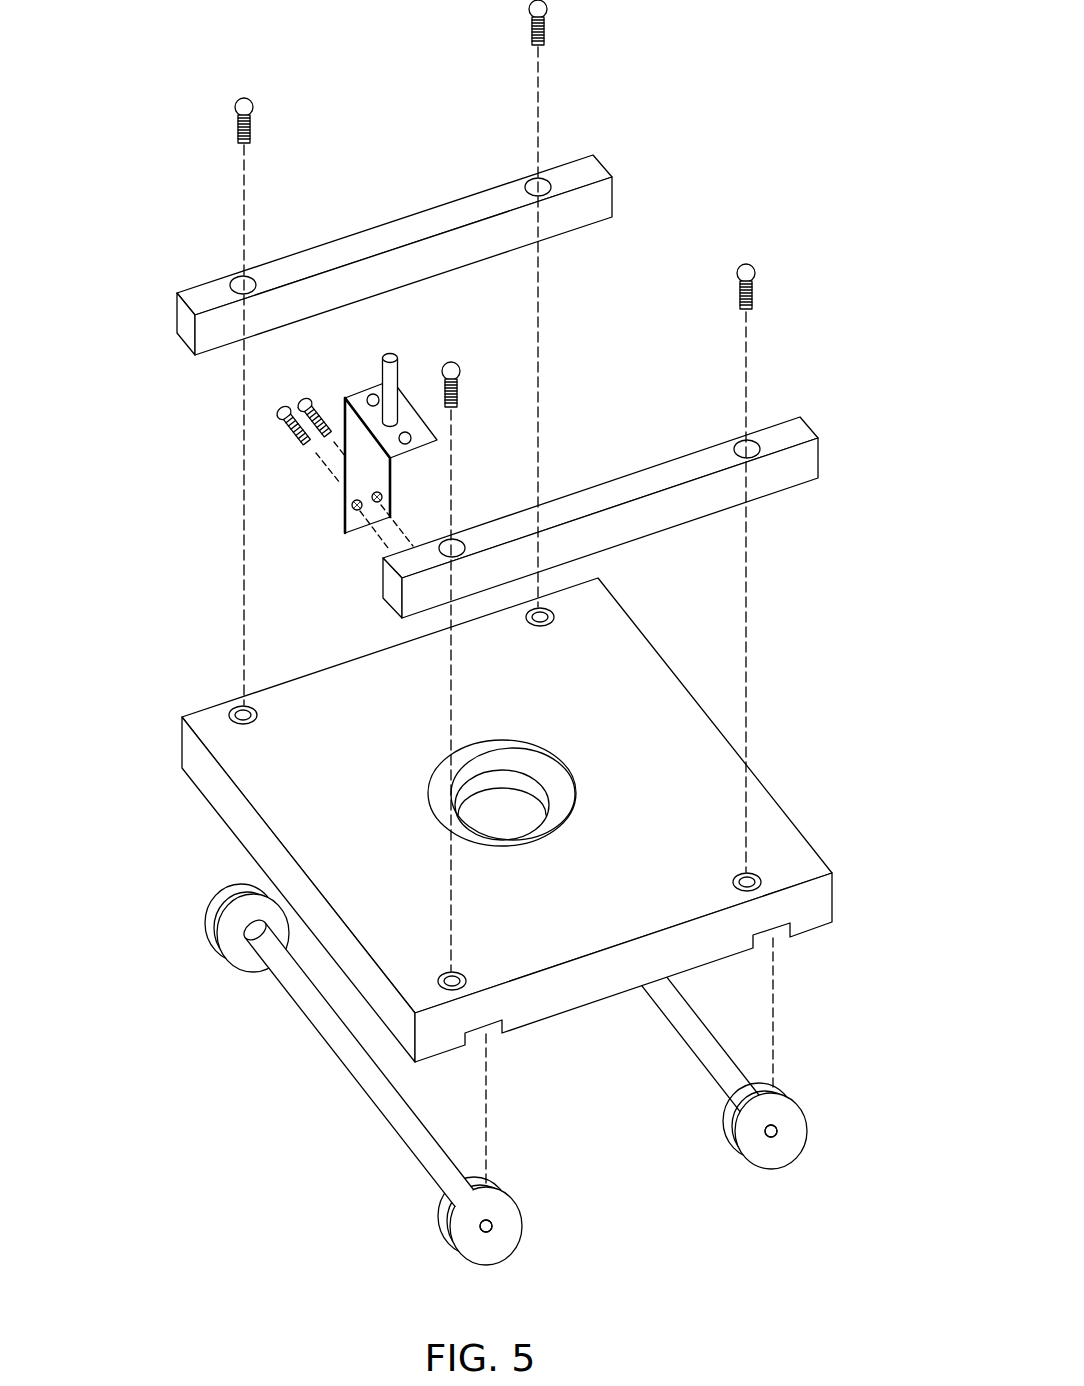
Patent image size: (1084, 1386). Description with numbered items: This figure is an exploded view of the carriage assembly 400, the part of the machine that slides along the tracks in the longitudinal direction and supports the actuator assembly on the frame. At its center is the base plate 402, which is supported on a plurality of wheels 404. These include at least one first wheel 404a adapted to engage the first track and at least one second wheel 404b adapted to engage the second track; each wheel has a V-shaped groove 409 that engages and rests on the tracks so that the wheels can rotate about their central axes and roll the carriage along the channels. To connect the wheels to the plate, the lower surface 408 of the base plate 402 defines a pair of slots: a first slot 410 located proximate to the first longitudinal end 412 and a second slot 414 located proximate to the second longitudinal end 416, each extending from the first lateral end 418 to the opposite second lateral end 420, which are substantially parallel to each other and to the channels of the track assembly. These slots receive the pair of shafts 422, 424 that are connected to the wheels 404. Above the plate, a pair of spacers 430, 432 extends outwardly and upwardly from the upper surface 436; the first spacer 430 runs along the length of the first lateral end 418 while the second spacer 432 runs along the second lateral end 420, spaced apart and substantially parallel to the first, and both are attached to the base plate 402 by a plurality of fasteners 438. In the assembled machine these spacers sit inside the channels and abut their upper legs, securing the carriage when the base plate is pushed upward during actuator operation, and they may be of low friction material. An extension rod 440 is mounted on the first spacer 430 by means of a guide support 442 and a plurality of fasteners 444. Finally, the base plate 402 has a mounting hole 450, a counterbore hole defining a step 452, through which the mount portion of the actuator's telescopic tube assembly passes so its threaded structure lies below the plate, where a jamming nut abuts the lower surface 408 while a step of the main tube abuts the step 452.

The carriage assembly 400 is at (356, 94).
The base plate 402 is at (182, 743).
The wheels 404 is at (208, 921).
The first wheel 404a is at (438, 1227).
The second wheel 404b is at (210, 937).
The lower surface 408 is at (559, 1016).
The V-shaped groove 409 is at (226, 895).
The first slot 410 is at (777, 941).
The first longitudinal end 412 is at (802, 853).
The second slot 414 is at (496, 1030).
The second longitudinal end 416 is at (228, 800).
The first lateral end 418 is at (815, 908).
The second lateral end 420 is at (302, 676).
The shaft 422 is at (695, 1035).
The shaft 424 is at (337, 1043).
The first spacer 430 is at (822, 458).
The second spacer 432 is at (591, 166).
The upper surface 436 is at (594, 887).
The fasteners 438 is at (531, 26).
The extension rod 440 is at (382, 370).
The guide support 442 is at (345, 473).
The fasteners 444 is at (280, 416).
The mounting hole 450 is at (512, 817).
The step 452 is at (498, 762).